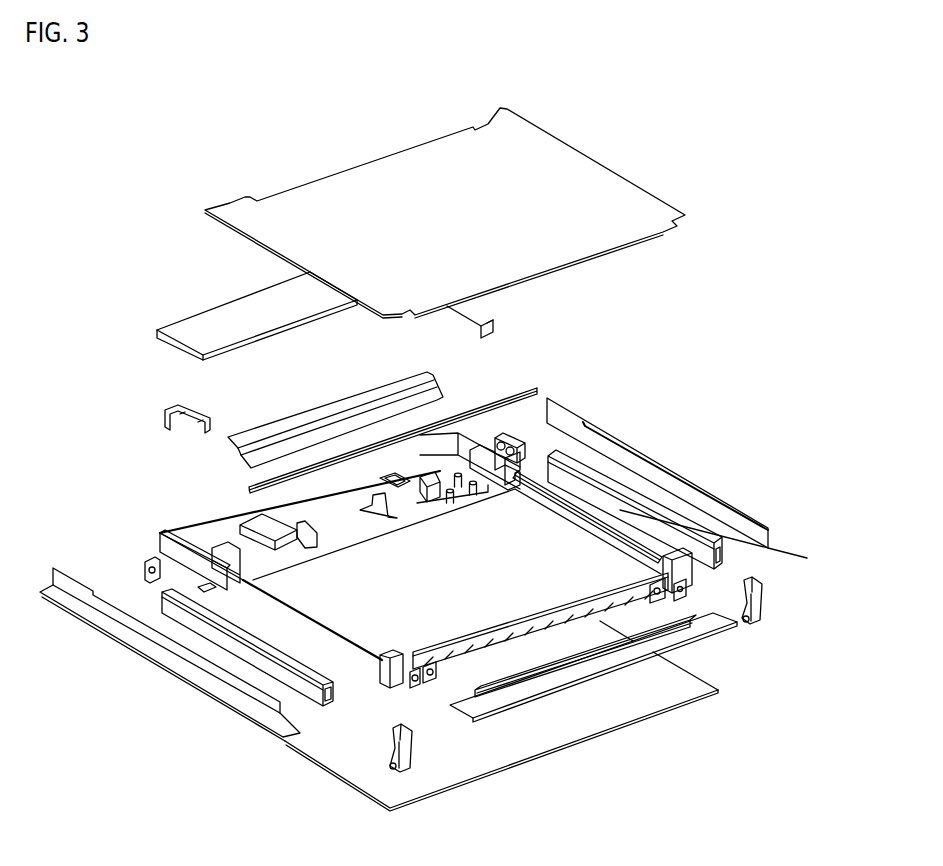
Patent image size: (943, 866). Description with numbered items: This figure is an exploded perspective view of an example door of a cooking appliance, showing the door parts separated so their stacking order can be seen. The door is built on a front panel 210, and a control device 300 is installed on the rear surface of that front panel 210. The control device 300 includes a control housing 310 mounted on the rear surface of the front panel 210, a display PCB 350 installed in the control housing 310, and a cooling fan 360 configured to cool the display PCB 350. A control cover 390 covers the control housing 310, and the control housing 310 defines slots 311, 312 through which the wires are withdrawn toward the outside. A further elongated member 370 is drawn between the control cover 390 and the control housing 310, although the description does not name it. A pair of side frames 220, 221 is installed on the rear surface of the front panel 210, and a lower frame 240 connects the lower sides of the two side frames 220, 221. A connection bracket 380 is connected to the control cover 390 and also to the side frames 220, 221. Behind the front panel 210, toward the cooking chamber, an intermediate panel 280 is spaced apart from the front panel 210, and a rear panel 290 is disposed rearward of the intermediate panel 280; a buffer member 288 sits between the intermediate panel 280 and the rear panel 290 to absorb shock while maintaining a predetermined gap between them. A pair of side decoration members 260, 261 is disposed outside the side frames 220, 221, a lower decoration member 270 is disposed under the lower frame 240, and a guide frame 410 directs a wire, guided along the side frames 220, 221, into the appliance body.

The front panel 210 is at (313, 752).
The side frame 220 is at (263, 658).
The side frame 221 is at (638, 493).
The lower frame 240 is at (522, 632).
The side decoration member 260 is at (120, 636).
The side decoration member 261 is at (707, 500).
The lower decoration member 270 is at (680, 640).
The intermediate panel 280 is at (377, 643).
The buffer member 288 is at (570, 493).
The rear panel 290 is at (594, 176).
The control device 300 is at (148, 543).
The control housing 310 is at (217, 537).
The slot 311 is at (203, 589).
The slot 312 is at (530, 480).
The display PCB 350 is at (358, 488).
The cooling fan 360 is at (500, 428).
The guide channel 370 is at (407, 397).
The connection bracket 380 is at (484, 319).
The control cover 390 is at (208, 312).
The guide frame 410 is at (408, 757).